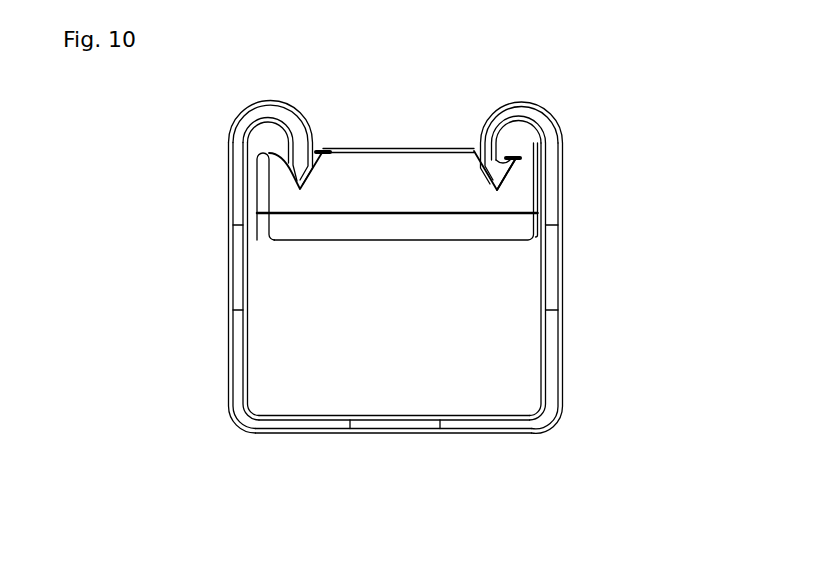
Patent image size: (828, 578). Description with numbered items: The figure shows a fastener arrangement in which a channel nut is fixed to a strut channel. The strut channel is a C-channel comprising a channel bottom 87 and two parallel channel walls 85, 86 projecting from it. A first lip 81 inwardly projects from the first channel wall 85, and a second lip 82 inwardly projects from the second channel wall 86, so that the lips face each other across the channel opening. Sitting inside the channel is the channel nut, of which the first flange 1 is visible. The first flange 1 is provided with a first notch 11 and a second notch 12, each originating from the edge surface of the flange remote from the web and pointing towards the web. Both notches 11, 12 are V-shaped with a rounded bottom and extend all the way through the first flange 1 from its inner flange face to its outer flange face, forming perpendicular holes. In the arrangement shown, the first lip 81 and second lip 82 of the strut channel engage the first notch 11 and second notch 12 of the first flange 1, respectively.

The first flange 1 is at (390, 182).
The first notch 11 is at (300, 183).
The second notch 12 is at (503, 172).
The first lip 81 is at (298, 132).
The second lip 82 is at (495, 134).
The first channel wall 85 is at (232, 338).
The second channel wall 86 is at (555, 342).
The channel bottom 87 is at (483, 428).